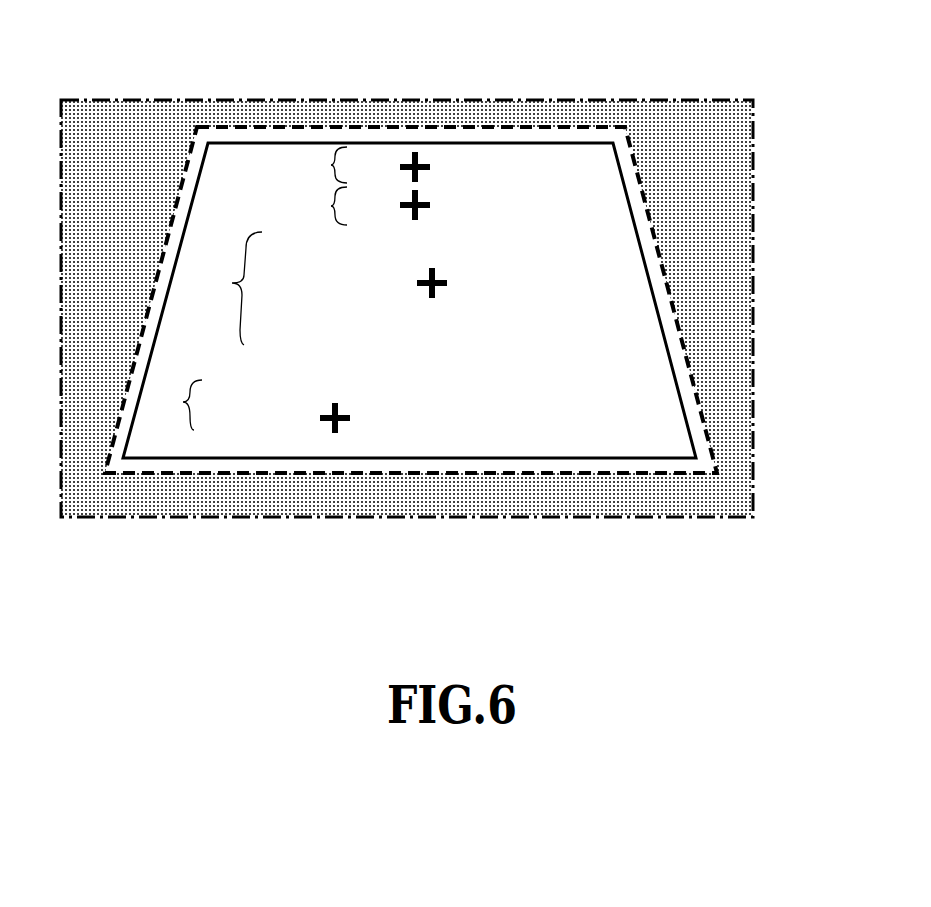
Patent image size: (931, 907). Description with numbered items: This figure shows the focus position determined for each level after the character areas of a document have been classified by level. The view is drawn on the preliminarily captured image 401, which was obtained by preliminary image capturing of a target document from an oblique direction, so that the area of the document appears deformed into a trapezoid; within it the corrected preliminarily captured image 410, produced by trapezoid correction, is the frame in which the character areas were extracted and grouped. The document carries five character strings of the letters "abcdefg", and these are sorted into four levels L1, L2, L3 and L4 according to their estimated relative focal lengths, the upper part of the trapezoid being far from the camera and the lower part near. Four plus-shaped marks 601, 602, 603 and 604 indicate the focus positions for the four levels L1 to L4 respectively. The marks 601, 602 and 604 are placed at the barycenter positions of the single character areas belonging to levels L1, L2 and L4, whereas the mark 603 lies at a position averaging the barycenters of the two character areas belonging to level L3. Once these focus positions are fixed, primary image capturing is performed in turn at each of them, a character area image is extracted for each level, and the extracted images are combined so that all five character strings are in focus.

The preliminarily captured image 401 is at (127, 98).
The corrected preliminarily captured image 410 is at (573, 143).
The + mark 601 is at (415, 152).
The + mark 602 is at (420, 205).
The + mark 603 is at (448, 281).
The + mark 604 is at (337, 425).
The level L1 is at (331, 165).
The level L2 is at (331, 206).
The level L3 is at (232, 283).
The level L4 is at (183, 402).